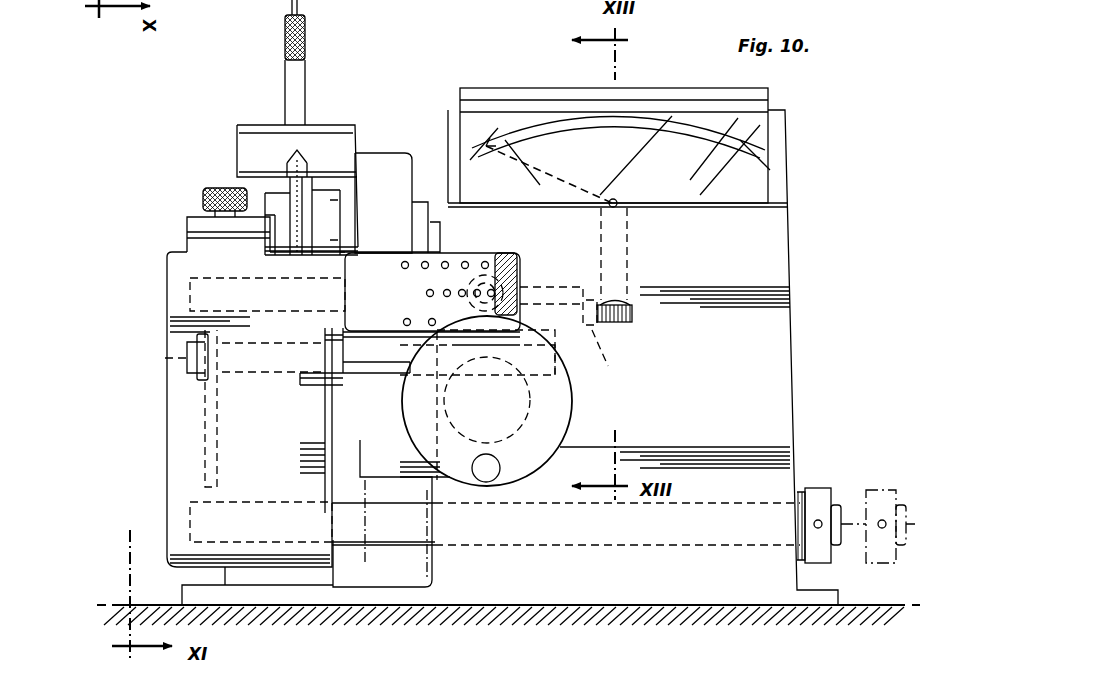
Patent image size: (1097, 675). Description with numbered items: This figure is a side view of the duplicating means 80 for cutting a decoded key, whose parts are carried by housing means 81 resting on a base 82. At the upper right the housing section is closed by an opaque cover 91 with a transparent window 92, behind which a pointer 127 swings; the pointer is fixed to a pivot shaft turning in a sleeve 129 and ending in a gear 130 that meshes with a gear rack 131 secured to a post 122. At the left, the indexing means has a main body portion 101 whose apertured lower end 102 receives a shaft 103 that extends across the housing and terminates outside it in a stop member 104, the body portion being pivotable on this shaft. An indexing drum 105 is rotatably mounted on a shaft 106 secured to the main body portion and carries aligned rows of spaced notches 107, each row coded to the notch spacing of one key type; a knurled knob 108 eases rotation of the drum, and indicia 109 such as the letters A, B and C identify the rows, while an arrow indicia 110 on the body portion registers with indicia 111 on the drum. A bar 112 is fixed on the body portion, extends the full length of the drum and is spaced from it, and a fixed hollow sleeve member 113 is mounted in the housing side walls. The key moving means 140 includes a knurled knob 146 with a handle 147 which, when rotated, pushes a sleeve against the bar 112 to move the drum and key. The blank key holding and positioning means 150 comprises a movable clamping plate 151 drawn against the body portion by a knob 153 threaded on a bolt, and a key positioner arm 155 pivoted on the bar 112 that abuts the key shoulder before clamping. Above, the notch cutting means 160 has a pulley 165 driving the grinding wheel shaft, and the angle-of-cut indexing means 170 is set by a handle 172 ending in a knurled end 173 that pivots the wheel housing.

The duplicating means 80 is at (682, 355).
The housing means 81 is at (762, 322).
The base 82 is at (595, 590).
The opaque cover 91 is at (645, 126).
The transparent window 92 is at (652, 125).
The main body portion 101 is at (261, 483).
The apertured lower end 102 is at (290, 567).
The shaft 103 is at (395, 530).
The stop member 104 is at (828, 490).
The indexing drum 105 is at (345, 305).
The shaft 106 is at (172, 293).
The notches 107 is at (465, 262).
The knurled knob 108 is at (505, 260).
The indicia 109 is at (512, 292).
The indicia 110 is at (348, 250).
The indicia 111 is at (356, 292).
The bar 112 is at (165, 358).
The fixed hollow sleeve member 113 is at (477, 405).
The post 122 is at (567, 288).
The pointer 127 is at (552, 145).
The sleeve 129 is at (632, 250).
The gear 130 is at (634, 316).
The gear rack 131 is at (609, 359).
The key moving means 140 is at (577, 412).
The knurled knob 146 is at (487, 400).
The handle 147 is at (488, 478).
The blank key holding and positioning means 150 is at (160, 283).
The movable clamping plate 151 is at (192, 226).
The knob 153 is at (210, 188).
The key positioner arm 155 is at (205, 447).
The notch cutting means 160 is at (273, 200).
The pulley 165 is at (306, 190).
The angle-of-cut indexing means 170 is at (395, 148).
The handle 172 is at (308, 70).
The knurled end 173 is at (283, 25).